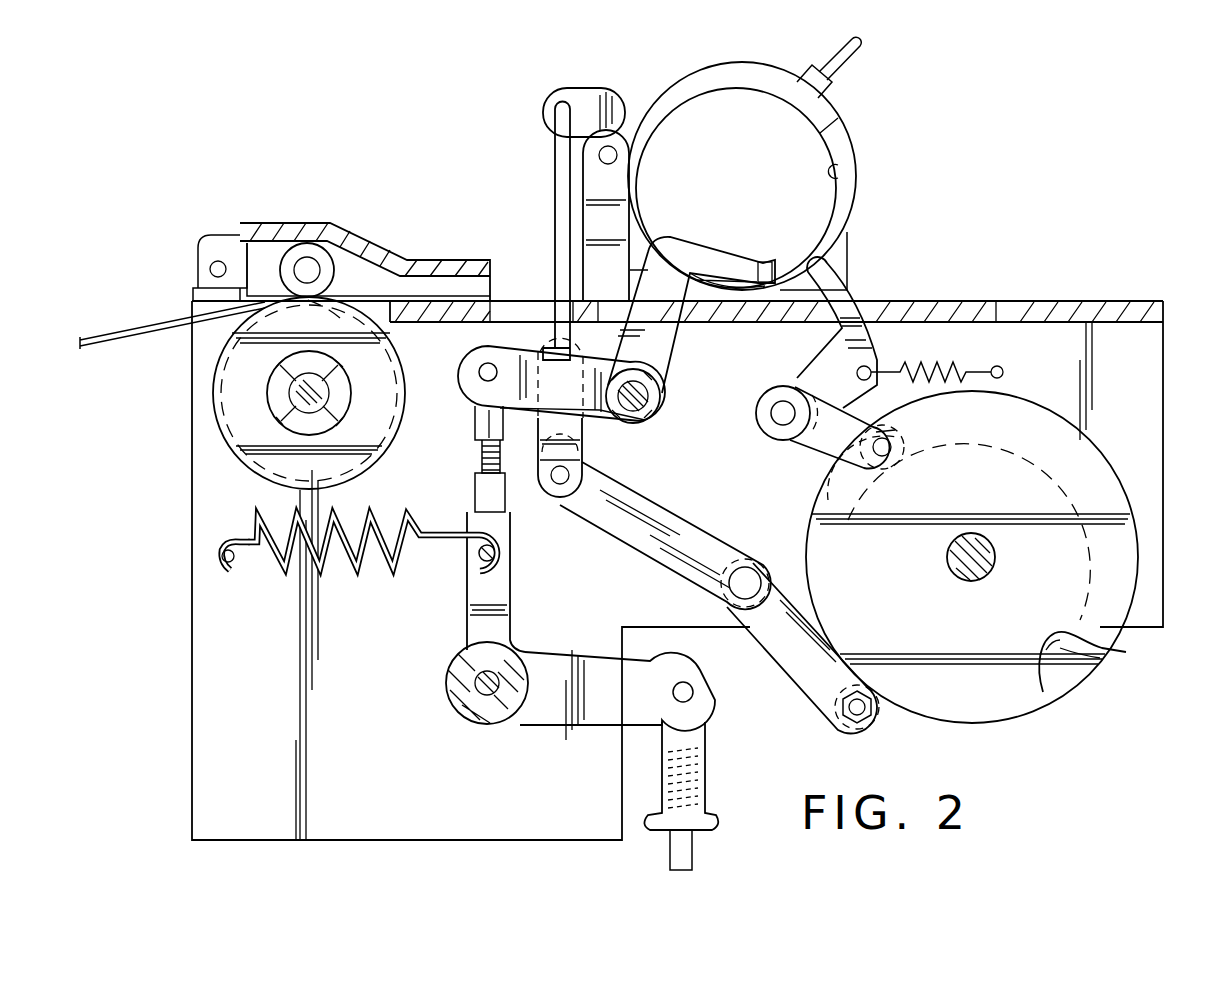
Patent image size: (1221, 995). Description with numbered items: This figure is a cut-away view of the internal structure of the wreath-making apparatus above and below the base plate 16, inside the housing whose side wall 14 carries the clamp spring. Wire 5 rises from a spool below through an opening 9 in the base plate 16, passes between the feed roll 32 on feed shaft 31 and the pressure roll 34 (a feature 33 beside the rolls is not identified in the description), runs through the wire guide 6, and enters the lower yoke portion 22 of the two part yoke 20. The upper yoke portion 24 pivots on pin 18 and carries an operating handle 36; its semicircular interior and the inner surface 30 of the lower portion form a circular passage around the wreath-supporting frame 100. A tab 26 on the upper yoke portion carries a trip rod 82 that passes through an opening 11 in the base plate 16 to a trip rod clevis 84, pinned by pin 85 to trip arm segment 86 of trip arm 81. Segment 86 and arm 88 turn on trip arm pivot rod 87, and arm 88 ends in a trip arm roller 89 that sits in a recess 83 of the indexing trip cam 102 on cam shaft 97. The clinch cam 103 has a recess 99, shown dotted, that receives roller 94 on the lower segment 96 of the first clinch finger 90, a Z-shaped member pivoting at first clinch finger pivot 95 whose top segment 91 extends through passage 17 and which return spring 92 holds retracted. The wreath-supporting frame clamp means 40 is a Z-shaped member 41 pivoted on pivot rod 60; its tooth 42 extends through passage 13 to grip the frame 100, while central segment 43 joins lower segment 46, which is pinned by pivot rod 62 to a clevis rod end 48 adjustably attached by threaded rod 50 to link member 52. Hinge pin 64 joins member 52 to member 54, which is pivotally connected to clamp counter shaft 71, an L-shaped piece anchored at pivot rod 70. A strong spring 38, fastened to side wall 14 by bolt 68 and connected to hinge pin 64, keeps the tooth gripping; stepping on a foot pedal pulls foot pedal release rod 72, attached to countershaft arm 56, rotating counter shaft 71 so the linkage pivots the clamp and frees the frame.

The wire 5 is at (152, 330).
The wire guide 6 is at (400, 258).
The opening 9 is at (366, 314).
The opening 11 is at (530, 310).
The passage 13 is at (605, 312).
The side wall 14 is at (1158, 372).
The base plate 16 is at (1005, 316).
The passage 17 is at (812, 318).
The pin 18 is at (617, 157).
The two part yoke 20 is at (781, 163).
The lower yoke portion 22 is at (845, 218).
The upper yoke portion 24 is at (712, 82).
The tab 26 is at (612, 92).
The inner surface 30 is at (840, 170).
The feed shaft 31 is at (325, 390).
The feed roll 32 is at (268, 463).
The wheel rim 33 is at (372, 462).
The pressure roll 34 is at (325, 273).
The operating handle 36 is at (853, 58).
The spring 38 is at (350, 572).
The wreath-supporting frame clamp means 40 is at (489, 529).
The Z-shaped member 41 is at (672, 416).
The tooth 42 is at (718, 248).
The central segment 43 is at (665, 330).
The lower segment 46 is at (625, 420).
The clevis rod end 48 is at (480, 415).
The threaded rod 50 is at (486, 452).
The wreath-supporting frame clamp link member 52 is at (510, 530).
The member 54 is at (510, 586).
The wreath-supporting frame clamp countershaft arm 56 is at (570, 735).
The pivot rod 60 is at (652, 395).
The pivot rod 62 is at (480, 372).
The hinge pin 64 is at (478, 556).
The bolt 68 is at (232, 568).
The wreath-supporting frame clamp counter shaft pivot rod 70 is at (487, 700).
The clamp counter shaft 71 is at (455, 703).
The foot pedal release rod 72 is at (705, 790).
The trip arm 81 is at (767, 664).
The trip rod 82 is at (555, 178).
The recess 83 is at (1055, 640).
The trip rod clevis 84 is at (580, 440).
The pin 85 is at (556, 484).
The trip arm segment 86 is at (700, 532).
The trip arm pivot rod 87 is at (750, 578).
The arm 88 is at (805, 680).
The trip arm roller 89 is at (860, 722).
The first clinch finger 90 is at (867, 378).
The top segment 91 is at (862, 298).
The first clinch finger return spring 92 is at (955, 352).
The roller 94 is at (890, 445).
The first clinch finger pivot 95 is at (782, 432).
The lower segment 96 is at (866, 441).
The cam shaft 97 is at (995, 556).
The recess 99 is at (1110, 472).
The wreath-supporting frame 100 is at (763, 262).
The indexing trip cam 102 is at (1022, 700).
The clinch cam 103 is at (1100, 672).